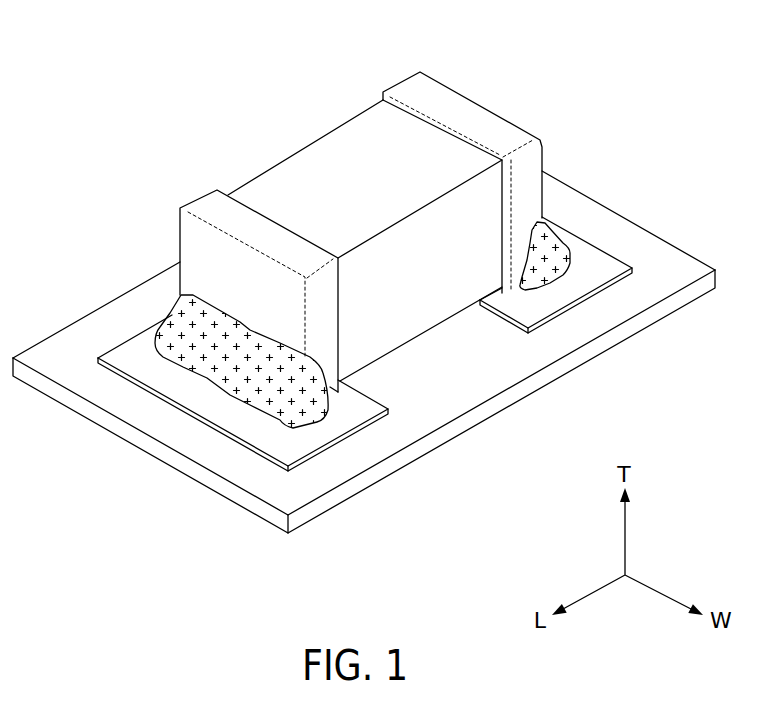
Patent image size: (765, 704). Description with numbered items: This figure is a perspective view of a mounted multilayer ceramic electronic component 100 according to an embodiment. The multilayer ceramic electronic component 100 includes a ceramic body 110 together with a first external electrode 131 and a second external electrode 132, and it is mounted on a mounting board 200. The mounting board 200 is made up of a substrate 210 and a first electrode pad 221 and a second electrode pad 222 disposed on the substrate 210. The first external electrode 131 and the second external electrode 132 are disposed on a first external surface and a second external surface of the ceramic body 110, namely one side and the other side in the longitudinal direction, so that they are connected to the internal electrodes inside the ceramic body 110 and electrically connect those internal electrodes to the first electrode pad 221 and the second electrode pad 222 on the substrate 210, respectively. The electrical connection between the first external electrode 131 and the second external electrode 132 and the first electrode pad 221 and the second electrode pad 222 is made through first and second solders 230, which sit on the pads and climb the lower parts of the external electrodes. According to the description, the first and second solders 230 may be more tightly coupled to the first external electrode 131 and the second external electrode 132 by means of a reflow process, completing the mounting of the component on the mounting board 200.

The mounting board 200 is at (137, 43).
The multilayer ceramic electronic component 100 is at (331, 112).
The ceramic body 110 is at (315, 160).
The first external electrode 131 is at (212, 212).
The second external electrode 132 is at (410, 93).
The substrate 210 is at (477, 372).
The first electrode pad 221 is at (333, 420).
The second electrode pad 222 is at (577, 278).
The first and second solders 230 is at (222, 360).